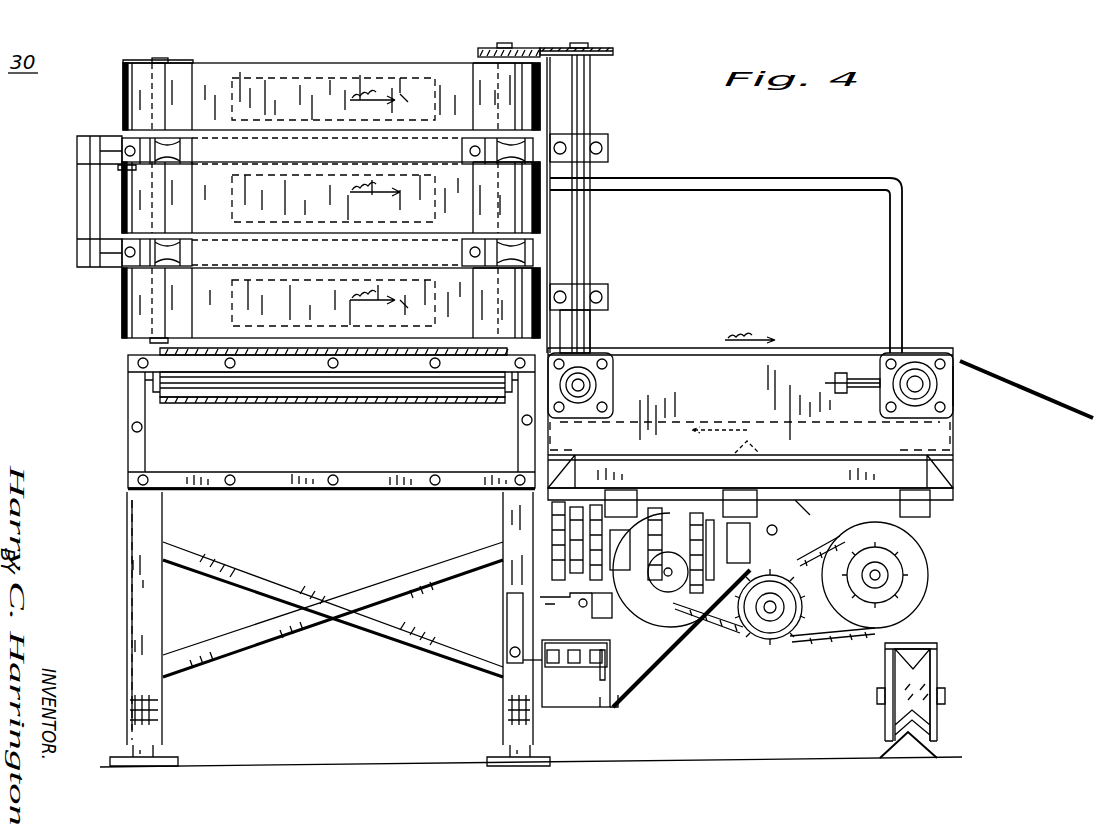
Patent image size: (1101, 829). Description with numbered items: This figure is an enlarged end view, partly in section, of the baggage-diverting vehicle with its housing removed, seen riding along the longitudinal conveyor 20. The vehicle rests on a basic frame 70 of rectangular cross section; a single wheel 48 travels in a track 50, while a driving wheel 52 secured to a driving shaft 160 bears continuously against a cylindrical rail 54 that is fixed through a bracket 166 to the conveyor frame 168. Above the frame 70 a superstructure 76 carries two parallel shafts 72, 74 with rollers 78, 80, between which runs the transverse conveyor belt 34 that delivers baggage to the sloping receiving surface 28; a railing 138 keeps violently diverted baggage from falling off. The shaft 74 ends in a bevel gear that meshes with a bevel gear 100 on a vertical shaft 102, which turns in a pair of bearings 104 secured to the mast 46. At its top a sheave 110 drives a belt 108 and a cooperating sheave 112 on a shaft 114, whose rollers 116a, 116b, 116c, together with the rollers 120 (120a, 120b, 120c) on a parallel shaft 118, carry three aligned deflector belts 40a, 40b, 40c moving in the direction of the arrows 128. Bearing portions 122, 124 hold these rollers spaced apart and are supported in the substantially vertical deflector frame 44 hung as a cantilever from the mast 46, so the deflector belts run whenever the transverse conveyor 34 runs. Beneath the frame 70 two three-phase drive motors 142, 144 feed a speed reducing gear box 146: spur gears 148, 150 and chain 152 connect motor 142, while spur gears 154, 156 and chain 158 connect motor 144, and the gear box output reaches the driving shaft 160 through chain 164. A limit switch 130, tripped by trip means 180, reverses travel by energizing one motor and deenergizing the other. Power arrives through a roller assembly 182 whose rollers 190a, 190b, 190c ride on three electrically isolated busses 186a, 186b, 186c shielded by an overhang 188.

The conveyor 20 is at (342, 450).
The receiving surface 28 is at (1016, 382).
The conveyor belt 34 is at (814, 353).
The conveyor belt 40a is at (272, 82).
The conveyor belt 40b is at (270, 192).
The conveyor belt 40c is at (282, 292).
The frame 44 is at (76, 244).
The mast 46 is at (547, 135).
The wheel 48 is at (922, 689).
The track 50 is at (928, 758).
The driving wheel 52 is at (552, 524).
The rail 54 is at (590, 580).
The frame 70 is at (930, 474).
The shaft 72 is at (917, 381).
The shaft 74 is at (602, 370).
The superstructure 76 is at (940, 430).
The roller 78 is at (949, 388).
The roller 80 is at (583, 387).
The bevel gear 100 is at (591, 353).
The vertical shaft 102 is at (580, 234).
The bearings 104 is at (595, 148).
The belt 108 is at (575, 45).
The sheave 110 is at (600, 47).
The sheave 112 is at (482, 48).
The shaft 114 is at (502, 43).
The roller 116a is at (473, 63).
The roller 116b is at (476, 154).
The roller 116c is at (469, 338).
The shaft 118 is at (162, 58).
The rollers 120 is at (380, 193).
The roller 120a is at (137, 60).
The roller 120b is at (118, 169).
The roller 120c is at (132, 343).
The bearing portion 122 is at (138, 146).
The bearing portion 124 is at (434, 118).
The arrows 128 is at (345, 100).
The limit switch 130 is at (597, 617).
The railing 138 is at (748, 179).
The vehicle drive motor 142 is at (928, 577).
The vehicle drive motor 144 is at (645, 598).
The speed reducing gear box 146 is at (791, 510).
The spur gear 148 is at (868, 606).
The spur gear 150 is at (780, 641).
The chain 152 is at (822, 630).
The spur gear 154 is at (698, 629).
The spur gear 156 is at (748, 610).
The chain 158 is at (700, 594).
The driving shaft 160 is at (713, 510).
The chain 164 is at (655, 510).
The bracket 166 is at (510, 610).
The frame 168 is at (371, 594).
The trip means 180 is at (520, 622).
The roller assembly 182 is at (610, 705).
The bus 186a is at (547, 661).
The bus 186b is at (578, 662).
The bus 186c is at (605, 655).
The overhang 188 is at (610, 656).
The roller 190a is at (540, 664).
The roller 190b is at (576, 673).
The roller 190c is at (600, 706).